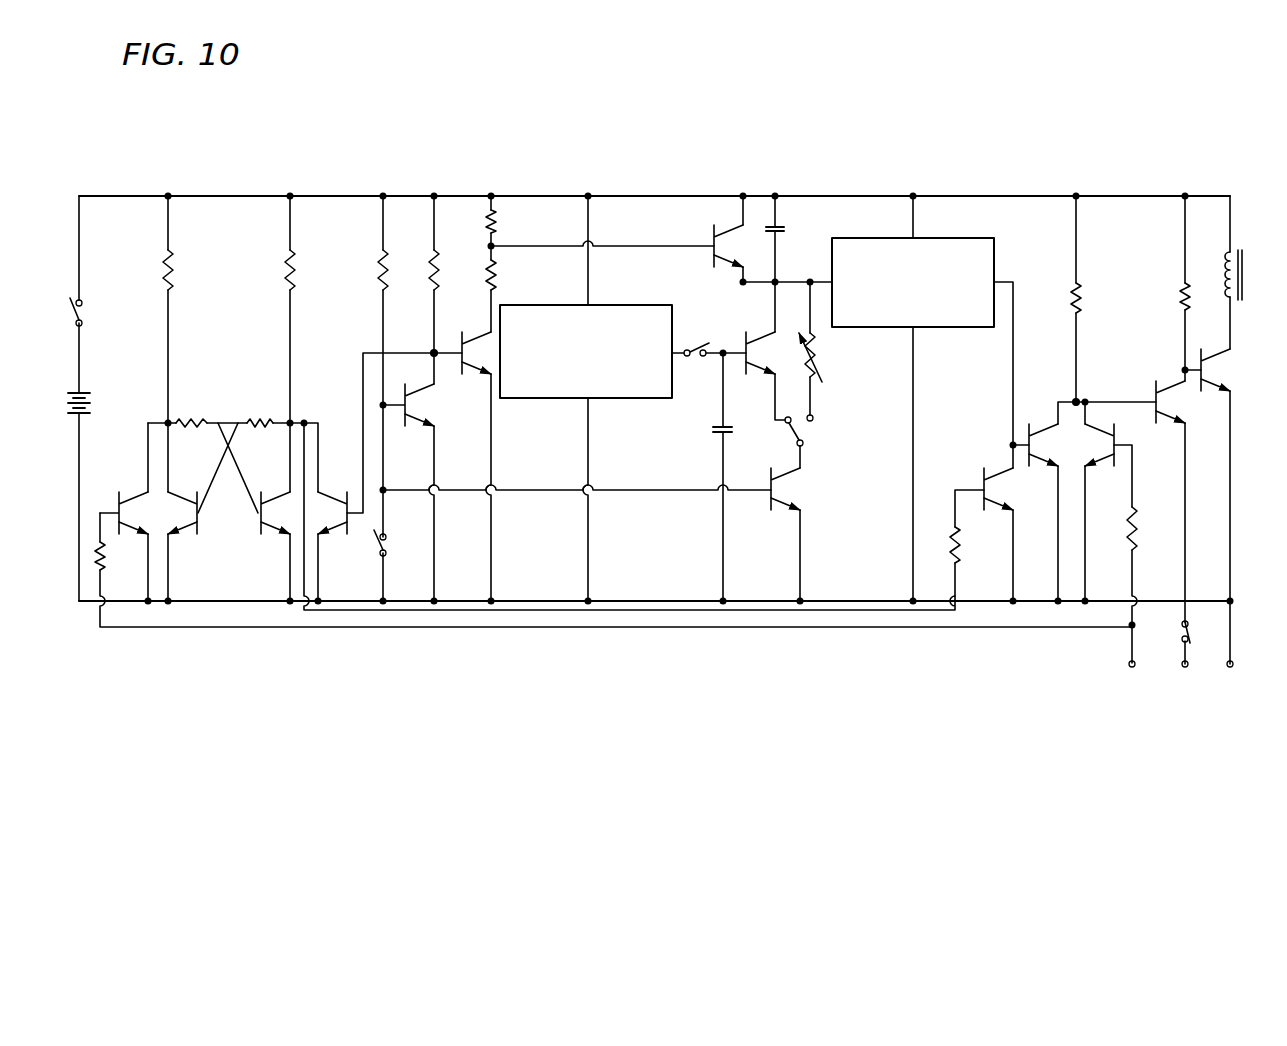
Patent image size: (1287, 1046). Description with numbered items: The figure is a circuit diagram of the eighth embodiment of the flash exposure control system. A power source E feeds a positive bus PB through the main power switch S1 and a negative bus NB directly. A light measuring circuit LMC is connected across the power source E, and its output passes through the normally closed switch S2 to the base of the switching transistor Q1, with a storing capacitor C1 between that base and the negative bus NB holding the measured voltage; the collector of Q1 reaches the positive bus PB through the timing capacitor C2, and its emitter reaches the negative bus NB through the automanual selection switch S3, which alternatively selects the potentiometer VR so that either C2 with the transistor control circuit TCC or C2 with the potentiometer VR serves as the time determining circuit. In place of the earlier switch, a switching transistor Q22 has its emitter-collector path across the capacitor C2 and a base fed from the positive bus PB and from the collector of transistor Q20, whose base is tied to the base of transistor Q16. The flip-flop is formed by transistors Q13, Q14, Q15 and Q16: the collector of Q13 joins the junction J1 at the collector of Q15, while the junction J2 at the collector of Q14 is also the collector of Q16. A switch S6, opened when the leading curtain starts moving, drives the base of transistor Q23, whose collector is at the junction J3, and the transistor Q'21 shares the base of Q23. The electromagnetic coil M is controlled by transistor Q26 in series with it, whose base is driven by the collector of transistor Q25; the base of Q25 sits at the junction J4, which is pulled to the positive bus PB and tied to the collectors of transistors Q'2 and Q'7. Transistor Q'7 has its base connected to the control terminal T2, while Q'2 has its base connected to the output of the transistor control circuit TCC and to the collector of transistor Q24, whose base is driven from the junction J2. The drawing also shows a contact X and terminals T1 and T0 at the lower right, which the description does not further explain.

The positive bus PB is at (888, 196).
The negative bus NB is at (648, 601).
The main power switch S1 is at (84, 304).
The power source E is at (88, 400).
The junction J1 is at (172, 420).
The junction J2 is at (288, 420).
The junction J3 is at (432, 352).
The junction J4 is at (1079, 403).
The switching transistor Q13 is at (137, 495).
The switching transistor Q14 is at (272, 538).
The switching transistor Q15 is at (182, 538).
The switching transistor Q16 is at (333, 538).
The switch S6 is at (386, 554).
The switching transistor Q23 is at (422, 420).
The switching transistor Q20 is at (468, 372).
The light measuring circuit LMC is at (620, 305).
The switch S2 is at (697, 345).
The switching transistor Q22 is at (725, 222).
The switching transistor Q1 is at (758, 338).
The timing capacitor C2 is at (783, 227).
The transistor control circuit TCC is at (930, 238).
The potentiometer VR is at (818, 355).
The automanual selection switch S3 is at (804, 432).
The storing capacitor C1 is at (710, 432).
The transistor Q'21 is at (771, 515).
The switching transistor Q24 is at (1004, 470).
The switching transistor Q'2 is at (1037, 415).
The switching transistor Q'7 is at (1100, 471).
The switching transistor Q25 is at (1160, 382).
The switching transistor Q26 is at (1217, 378).
The electromagnetic coil M is at (1224, 262).
The switch contact X is at (1187, 635).
The control terminal T2 is at (1126, 683).
The terminal T1 is at (1173, 683).
The terminal T0 is at (1222, 683).